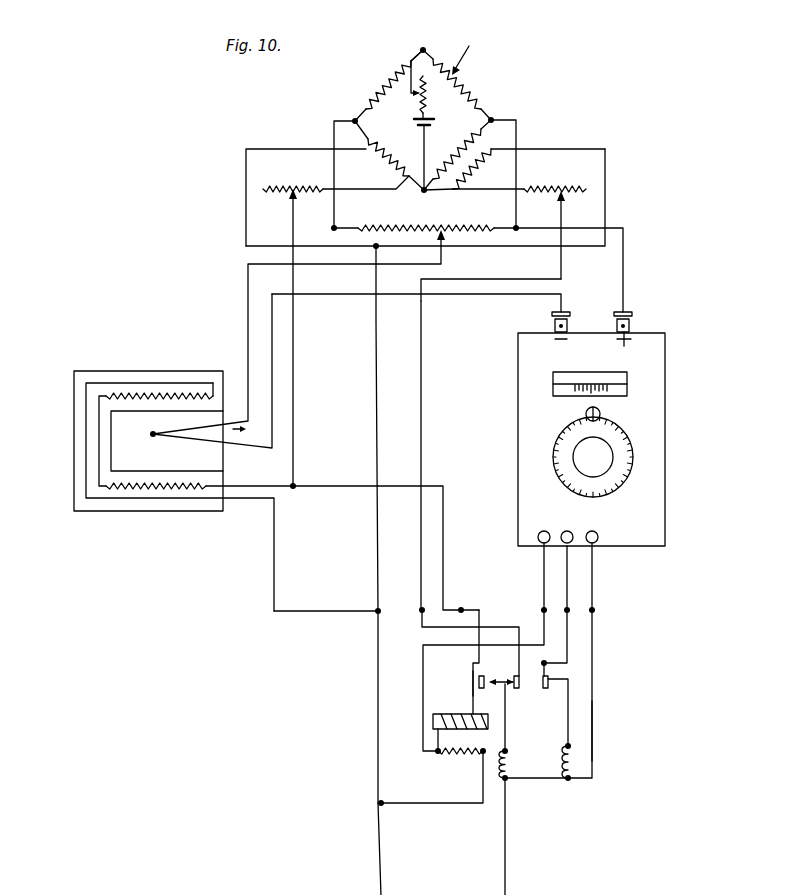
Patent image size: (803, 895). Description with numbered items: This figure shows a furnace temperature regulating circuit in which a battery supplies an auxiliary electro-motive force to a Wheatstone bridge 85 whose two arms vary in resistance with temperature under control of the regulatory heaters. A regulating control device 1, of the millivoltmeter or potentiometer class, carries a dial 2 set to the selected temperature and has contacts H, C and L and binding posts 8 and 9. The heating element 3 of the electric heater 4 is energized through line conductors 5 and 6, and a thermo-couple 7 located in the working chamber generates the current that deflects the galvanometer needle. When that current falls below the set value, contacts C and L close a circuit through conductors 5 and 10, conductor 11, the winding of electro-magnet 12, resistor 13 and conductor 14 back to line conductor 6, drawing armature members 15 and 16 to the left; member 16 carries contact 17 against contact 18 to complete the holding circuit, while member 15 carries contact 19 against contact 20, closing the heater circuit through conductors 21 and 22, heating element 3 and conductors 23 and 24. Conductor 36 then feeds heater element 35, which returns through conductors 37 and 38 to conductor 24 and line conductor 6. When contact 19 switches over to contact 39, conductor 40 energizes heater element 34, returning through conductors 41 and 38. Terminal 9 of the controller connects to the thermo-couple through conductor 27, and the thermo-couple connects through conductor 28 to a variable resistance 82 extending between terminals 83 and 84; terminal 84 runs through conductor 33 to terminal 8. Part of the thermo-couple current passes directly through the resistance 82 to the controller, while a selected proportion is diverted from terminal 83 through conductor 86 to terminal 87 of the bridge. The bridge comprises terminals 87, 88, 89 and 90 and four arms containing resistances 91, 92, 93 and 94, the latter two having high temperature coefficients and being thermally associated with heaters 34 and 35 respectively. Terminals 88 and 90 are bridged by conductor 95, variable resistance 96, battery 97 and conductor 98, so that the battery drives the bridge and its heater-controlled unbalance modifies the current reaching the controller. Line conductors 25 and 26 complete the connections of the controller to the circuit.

The regulating control device 1 is at (680, 420).
The dial 2 is at (622, 484).
The heating element 3 is at (85, 458).
The electric heater 4 is at (66, 424).
The line conductor 5 is at (505, 854).
The line conductor 6 is at (378, 840).
The thermo-couple 7 is at (160, 440).
The binding post 8 is at (628, 312).
The binding post 9 is at (552, 312).
The conductor 10 is at (592, 733).
The conductor 11 is at (470, 672).
The electro-magnet 12 is at (428, 719).
The resistor 13 is at (462, 754).
The conductor 14 is at (430, 804).
The armature member 15 is at (505, 746).
The armature member 16 is at (566, 728).
The contact 17 is at (558, 680).
The contact 18 is at (548, 673).
The contact 19 is at (500, 676).
The contact 20 is at (478, 684).
The conductor 21 is at (479, 617).
The conductor 22 is at (318, 486).
The conductor 23 is at (328, 612).
The conductor 24 is at (377, 702).
The conductor 25 is at (592, 584).
The conductor 26 is at (542, 582).
The conductor 27 is at (452, 297).
The conductor 28 is at (247, 318).
The conductor 33 is at (623, 268).
The heater element 34 is at (364, 150).
The heater element 35 is at (482, 154).
The conductor 36 is at (421, 390).
The conductor 37 is at (604, 172).
The conductor 38 is at (375, 320).
The contact 39 is at (515, 688).
The conductor 40 is at (294, 417).
The conductor 41 is at (245, 170).
The variable resistance 82 is at (376, 226).
The terminal 83 is at (332, 225).
The terminal 84 is at (516, 226).
The Wheatstone bridge 85 is at (473, 51).
The conductor 86 is at (333, 128).
The terminal 87 is at (353, 118).
The terminal 88 is at (424, 47).
The terminal 89 is at (492, 118).
The terminal 90 is at (428, 190).
The resistance 91 is at (381, 99).
The resistance 92 is at (462, 88).
The variable resistance 93 is at (403, 182).
The variable resistance 94 is at (452, 163).
The conductor 95 is at (410, 70).
The variable resistance 96 is at (418, 108).
The battery 97 is at (426, 118).
The conductor 98 is at (422, 152).